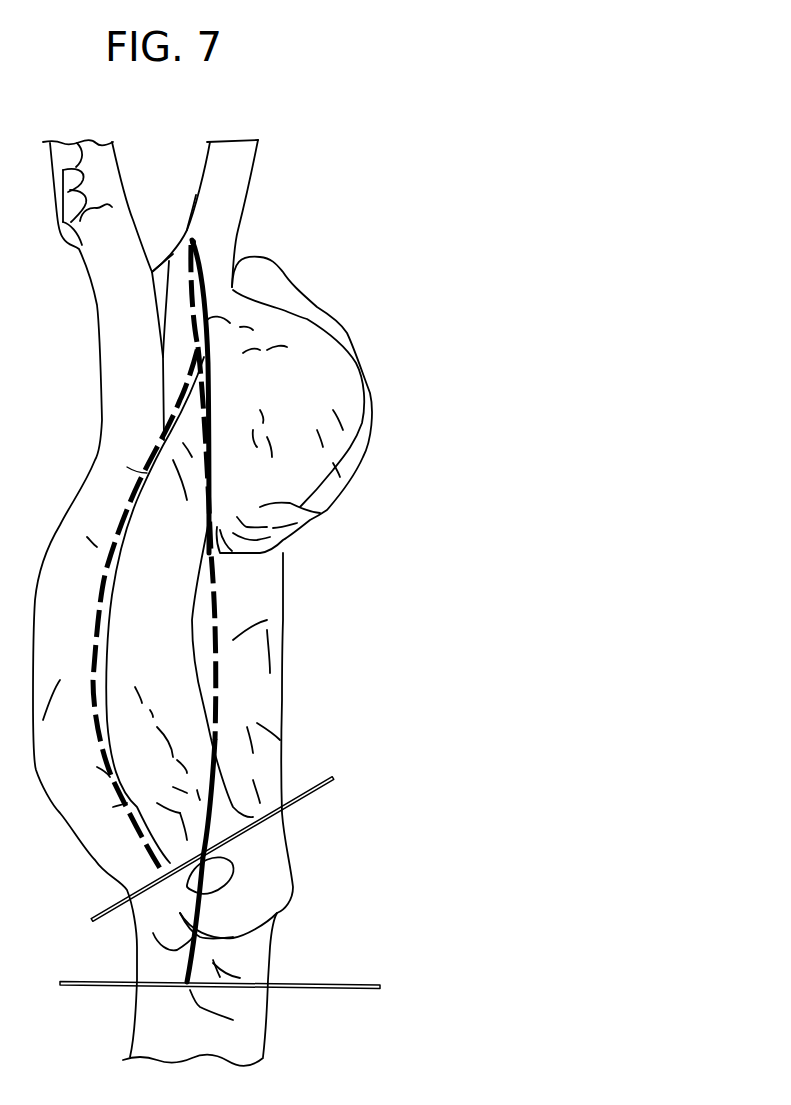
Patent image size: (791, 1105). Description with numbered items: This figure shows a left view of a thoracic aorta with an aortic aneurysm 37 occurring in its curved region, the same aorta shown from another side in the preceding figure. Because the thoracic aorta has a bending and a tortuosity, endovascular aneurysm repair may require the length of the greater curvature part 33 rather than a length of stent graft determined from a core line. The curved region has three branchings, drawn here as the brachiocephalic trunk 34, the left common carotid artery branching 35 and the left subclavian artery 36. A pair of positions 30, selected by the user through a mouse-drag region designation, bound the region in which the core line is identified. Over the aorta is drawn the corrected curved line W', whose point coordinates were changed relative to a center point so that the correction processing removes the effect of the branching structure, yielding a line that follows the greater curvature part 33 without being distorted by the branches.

The pair of positions 30 is at (333, 778).
The greater curvature part 33 is at (110, 670).
The brachiocephalic trunk 34 is at (100, 312).
The left common carotid artery branching 35 is at (187, 217).
The left subclavian artery 36 is at (242, 227).
The aortic aneurysm 37 is at (370, 427).
The curved line W' is at (263, 610).